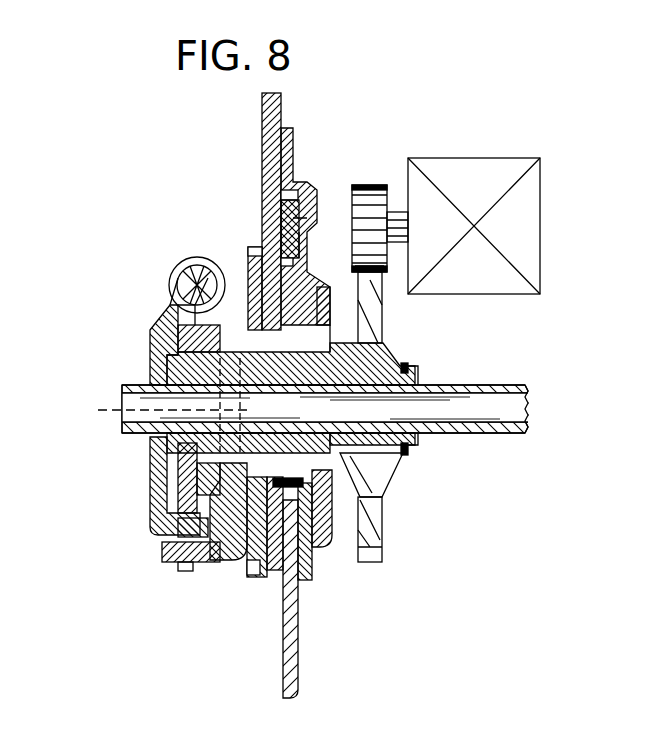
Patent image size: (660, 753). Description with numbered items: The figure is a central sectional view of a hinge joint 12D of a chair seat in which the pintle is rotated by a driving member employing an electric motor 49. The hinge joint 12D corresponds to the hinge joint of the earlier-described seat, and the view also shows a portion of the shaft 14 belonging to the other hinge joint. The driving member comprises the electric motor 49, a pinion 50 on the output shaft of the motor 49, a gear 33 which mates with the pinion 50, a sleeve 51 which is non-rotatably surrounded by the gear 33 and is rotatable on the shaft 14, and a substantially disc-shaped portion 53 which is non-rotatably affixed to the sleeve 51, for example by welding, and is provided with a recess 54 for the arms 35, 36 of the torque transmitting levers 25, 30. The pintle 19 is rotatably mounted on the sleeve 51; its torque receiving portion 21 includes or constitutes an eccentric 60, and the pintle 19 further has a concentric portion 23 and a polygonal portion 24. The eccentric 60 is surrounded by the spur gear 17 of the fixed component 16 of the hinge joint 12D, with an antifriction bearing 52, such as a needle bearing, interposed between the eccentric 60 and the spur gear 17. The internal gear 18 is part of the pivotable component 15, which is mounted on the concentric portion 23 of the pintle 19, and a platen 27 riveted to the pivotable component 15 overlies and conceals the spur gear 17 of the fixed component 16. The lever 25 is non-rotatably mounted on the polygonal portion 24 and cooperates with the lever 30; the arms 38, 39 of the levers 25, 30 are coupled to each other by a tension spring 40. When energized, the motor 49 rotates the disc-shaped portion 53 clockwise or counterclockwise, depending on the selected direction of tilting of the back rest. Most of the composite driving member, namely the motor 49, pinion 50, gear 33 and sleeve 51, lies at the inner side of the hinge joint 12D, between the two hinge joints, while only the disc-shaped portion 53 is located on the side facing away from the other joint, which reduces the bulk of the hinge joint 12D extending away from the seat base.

The hinge joint 12D is at (218, 632).
The shaft 14 is at (505, 388).
The pivotable component 15 is at (268, 117).
The fixed component 16 is at (290, 650).
The spur gear 17 is at (313, 547).
The internal gear 18 is at (268, 208).
The pintle 19 is at (357, 345).
The torque receiving portion 21 is at (248, 262).
The concentric portion 23 is at (250, 460).
The polygonal portion 24 is at (159, 405).
The lever 25 is at (228, 520).
The platen 27 is at (319, 232).
The lever 30 is at (157, 353).
The gear 33 is at (370, 535).
The arm 35 is at (180, 553).
The arm 36 is at (192, 527).
The arm 38 is at (237, 322).
The arm 39 is at (160, 313).
The tension spring 40 is at (185, 262).
The electric motor 49 is at (470, 172).
The pinion 50 is at (370, 196).
The sleeve 51 is at (412, 370).
The antifriction bearing 52 is at (337, 497).
The disc-shaped portion 53 is at (187, 473).
The recess 54 is at (184, 571).
The eccentric 60 is at (360, 322).